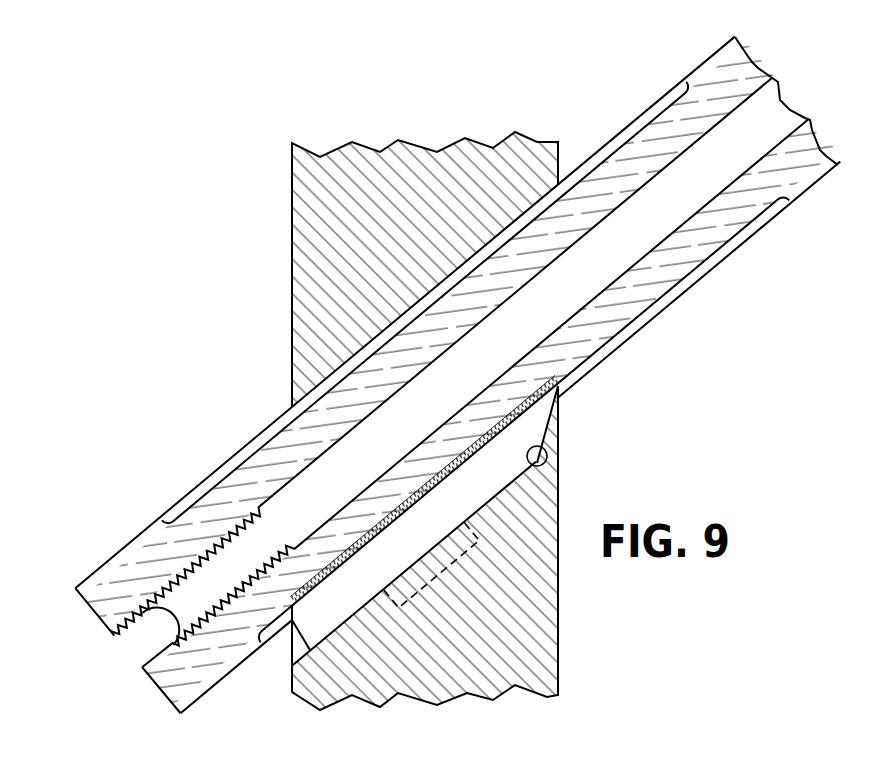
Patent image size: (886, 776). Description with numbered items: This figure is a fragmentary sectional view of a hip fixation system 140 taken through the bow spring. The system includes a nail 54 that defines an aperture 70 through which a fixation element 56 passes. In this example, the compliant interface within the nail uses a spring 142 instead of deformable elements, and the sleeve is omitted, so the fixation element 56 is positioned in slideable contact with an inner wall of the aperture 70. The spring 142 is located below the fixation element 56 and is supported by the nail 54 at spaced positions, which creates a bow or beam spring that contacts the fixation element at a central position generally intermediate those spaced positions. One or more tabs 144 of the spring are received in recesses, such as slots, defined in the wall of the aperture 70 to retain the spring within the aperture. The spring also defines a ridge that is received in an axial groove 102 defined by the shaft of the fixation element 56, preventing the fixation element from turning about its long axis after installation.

The hip fixation system 140 is at (267, 177).
The nail 54 is at (290, 251).
The fixation element 56 is at (649, 106).
The axial groove 102 is at (655, 307).
The spring 142 is at (552, 426).
The aperture 70 is at (546, 452).
The tab 144 is at (452, 594).